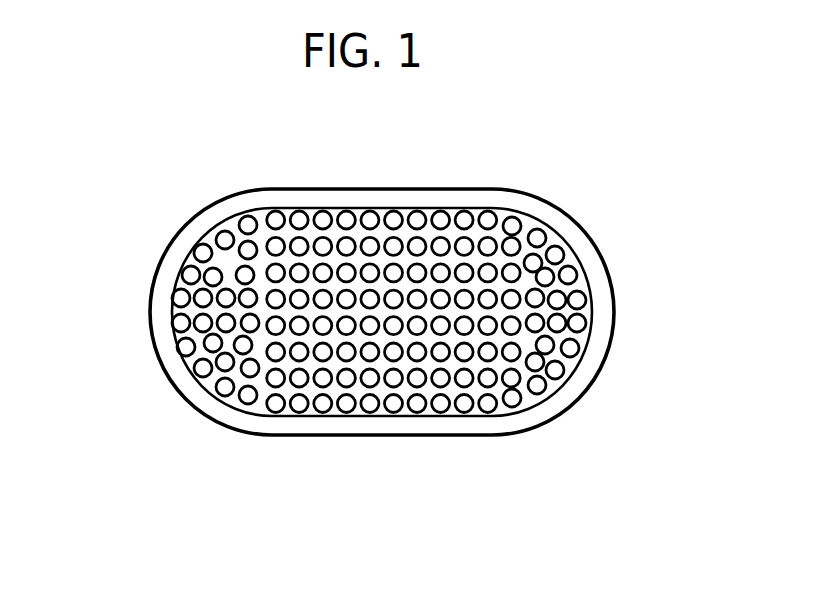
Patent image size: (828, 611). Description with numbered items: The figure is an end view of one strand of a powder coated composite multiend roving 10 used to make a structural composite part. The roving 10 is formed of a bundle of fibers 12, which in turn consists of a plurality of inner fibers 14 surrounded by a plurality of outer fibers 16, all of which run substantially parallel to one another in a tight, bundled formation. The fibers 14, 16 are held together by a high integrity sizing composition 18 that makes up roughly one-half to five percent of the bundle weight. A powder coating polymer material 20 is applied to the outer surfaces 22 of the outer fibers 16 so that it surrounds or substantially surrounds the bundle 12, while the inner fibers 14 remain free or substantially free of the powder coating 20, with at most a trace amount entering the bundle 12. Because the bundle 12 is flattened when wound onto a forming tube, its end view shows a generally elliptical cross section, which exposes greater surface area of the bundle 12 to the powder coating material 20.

The powder coated composite multiend roving 10 is at (553, 138).
The bundle of fibers 12 is at (248, 373).
The inner fibers 14 is at (417, 300).
The outer fibers 16 is at (443, 402).
The high integrity sizing composition 18 is at (355, 235).
The powder coating polymer material 20 is at (597, 285).
The outer surfaces 22 is at (203, 250).